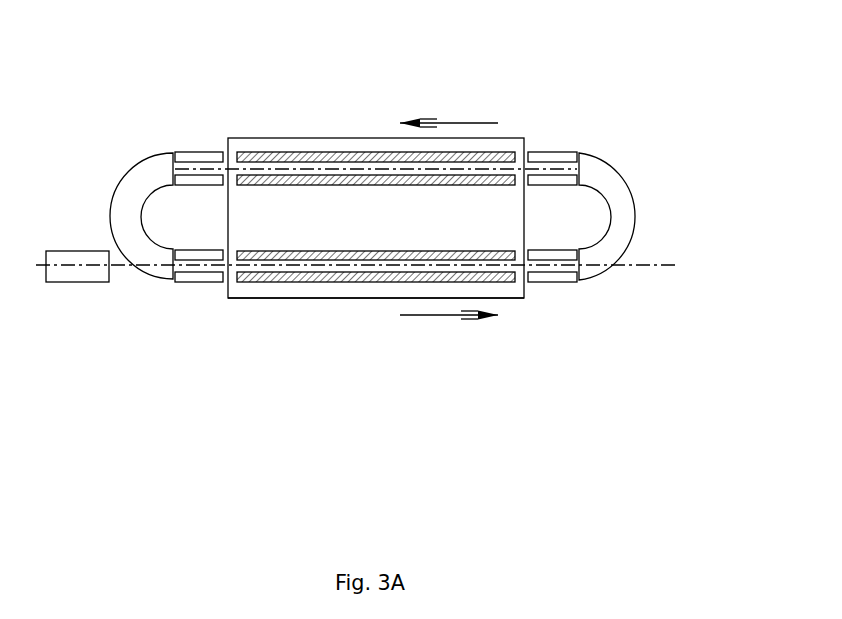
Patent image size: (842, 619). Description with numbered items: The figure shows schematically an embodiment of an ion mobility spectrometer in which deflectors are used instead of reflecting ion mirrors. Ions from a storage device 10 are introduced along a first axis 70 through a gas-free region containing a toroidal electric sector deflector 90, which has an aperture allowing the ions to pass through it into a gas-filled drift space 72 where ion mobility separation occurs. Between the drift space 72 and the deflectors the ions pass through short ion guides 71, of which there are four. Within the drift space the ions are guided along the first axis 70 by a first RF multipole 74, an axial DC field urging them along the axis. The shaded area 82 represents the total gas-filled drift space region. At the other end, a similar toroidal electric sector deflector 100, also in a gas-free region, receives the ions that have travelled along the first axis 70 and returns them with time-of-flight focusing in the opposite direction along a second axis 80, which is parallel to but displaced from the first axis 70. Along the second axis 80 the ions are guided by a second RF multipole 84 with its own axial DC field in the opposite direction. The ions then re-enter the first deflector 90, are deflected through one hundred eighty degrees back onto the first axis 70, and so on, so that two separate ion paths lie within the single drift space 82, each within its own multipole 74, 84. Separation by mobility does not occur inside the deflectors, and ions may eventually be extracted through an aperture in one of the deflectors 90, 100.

The storage device 10 is at (78, 282).
The first axis 70 is at (118, 265).
The short ion guides 71 is at (198, 152).
The gas-filled drift space 72 is at (272, 272).
The first RF multipole 74 is at (318, 270).
The second axis 80 is at (523, 162).
The gas-filled drift space region 82 is at (380, 298).
The second RF multipole 84 is at (353, 153).
The toroidal electric sector deflector 90 is at (108, 230).
The toroidal electric sector deflector 100 is at (637, 182).